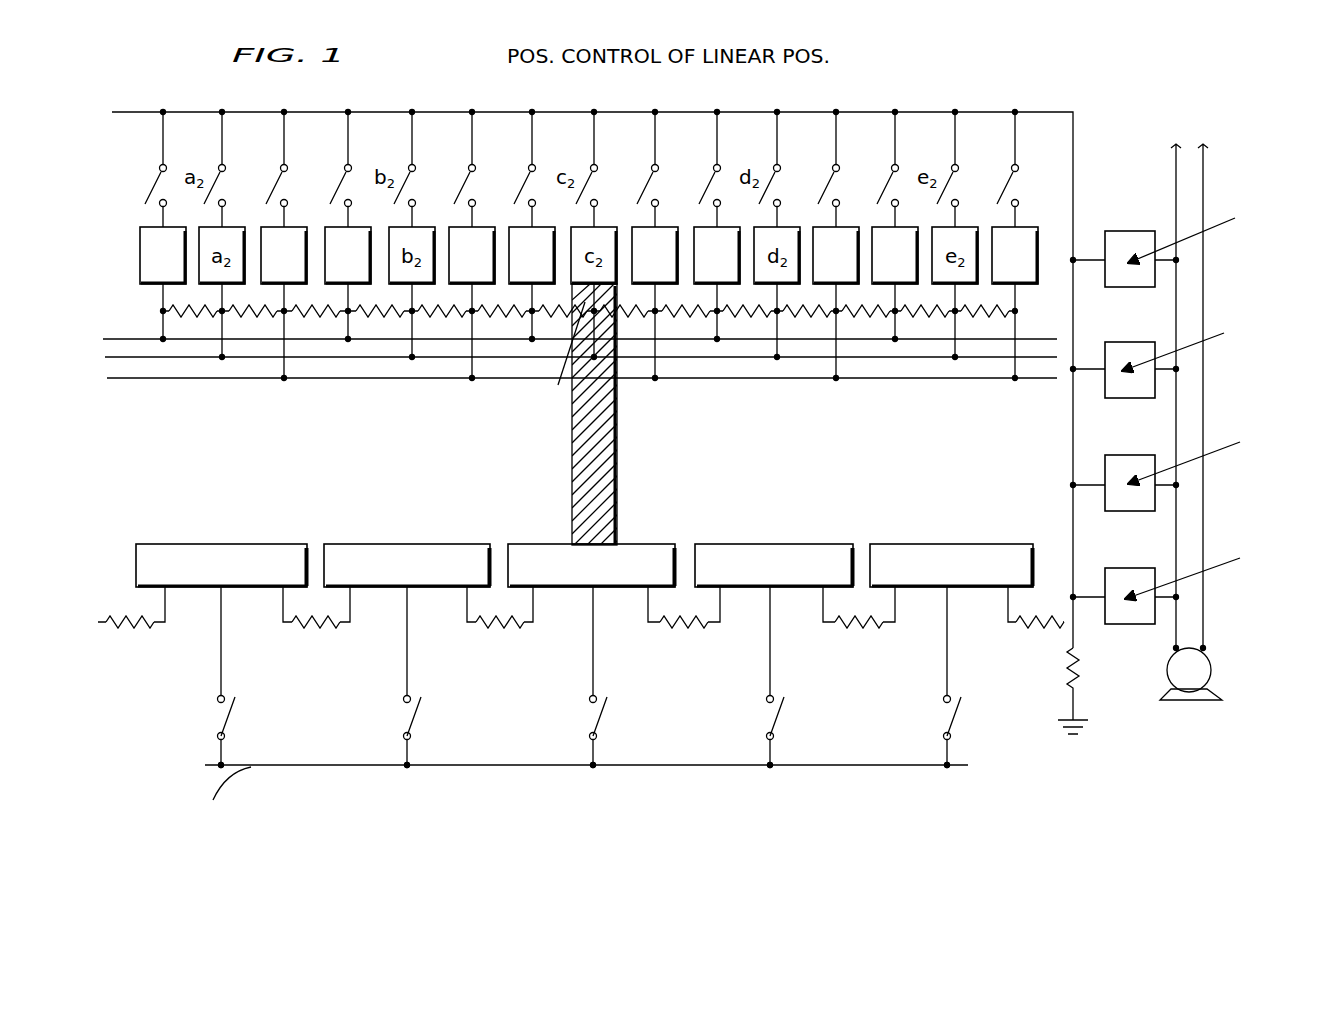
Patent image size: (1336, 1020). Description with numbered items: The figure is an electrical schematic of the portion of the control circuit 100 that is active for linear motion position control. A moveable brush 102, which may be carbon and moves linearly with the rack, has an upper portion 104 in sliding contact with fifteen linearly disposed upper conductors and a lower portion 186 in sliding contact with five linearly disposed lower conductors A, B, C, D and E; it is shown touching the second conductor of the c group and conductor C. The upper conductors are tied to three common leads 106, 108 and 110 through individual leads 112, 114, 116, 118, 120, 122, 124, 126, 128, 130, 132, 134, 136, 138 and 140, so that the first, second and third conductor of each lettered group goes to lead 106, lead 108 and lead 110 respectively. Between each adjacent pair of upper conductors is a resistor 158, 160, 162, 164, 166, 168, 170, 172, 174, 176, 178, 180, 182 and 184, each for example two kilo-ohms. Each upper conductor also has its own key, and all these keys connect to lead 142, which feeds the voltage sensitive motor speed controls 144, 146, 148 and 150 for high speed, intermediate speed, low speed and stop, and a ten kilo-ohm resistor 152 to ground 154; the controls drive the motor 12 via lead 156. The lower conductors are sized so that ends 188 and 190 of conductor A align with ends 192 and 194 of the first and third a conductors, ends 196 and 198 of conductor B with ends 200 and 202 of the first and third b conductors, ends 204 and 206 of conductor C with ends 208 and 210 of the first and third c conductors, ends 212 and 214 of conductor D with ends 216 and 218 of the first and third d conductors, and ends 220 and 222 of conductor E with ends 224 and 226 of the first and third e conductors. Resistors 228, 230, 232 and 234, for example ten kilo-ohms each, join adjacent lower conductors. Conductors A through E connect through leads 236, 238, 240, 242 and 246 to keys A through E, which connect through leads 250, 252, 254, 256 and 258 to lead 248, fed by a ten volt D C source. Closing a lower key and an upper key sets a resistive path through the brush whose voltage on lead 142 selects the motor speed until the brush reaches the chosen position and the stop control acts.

The motor 12 is at (1211, 670).
The control circuit 100 is at (1008, 755).
The moveable brush 102 is at (617, 437).
The upper portion of the brush 104 is at (552, 356).
The lead 106 is at (105, 338).
The lead 108 is at (103, 357).
The lead 110 is at (107, 378).
The lead 112 is at (159, 303).
The lead 114 is at (218, 303).
The lead 116 is at (280, 303).
The lead 118 is at (344, 303).
The lead 120 is at (408, 303).
The lead 122 is at (468, 303).
The lead 124 is at (528, 303).
The lead 126 is at (588, 303).
The lead 128 is at (656, 303).
The lead 130 is at (718, 303).
The lead 132 is at (778, 303).
The lead 134 is at (837, 303).
The lead 136 is at (896, 303).
The lead 138 is at (956, 303).
The lead 140 is at (1016, 303).
The lead 142 is at (860, 112).
The voltage sensitive motor speed control 144 is at (1147, 224).
The voltage sensitive motor speed control 146 is at (1147, 336).
The voltage sensitive motor speed control 148 is at (1147, 449).
The voltage sensitive motor speed control 150 is at (1147, 561).
The resistor 152 is at (1080, 668).
The ground 154 is at (1085, 716).
The lead 156 is at (1176, 192).
The resistor 158 is at (177, 316).
The resistor 160 is at (236, 316).
The resistor 162 is at (298, 316).
The resistor 164 is at (362, 316).
The resistor 166 is at (426, 316).
The resistor 168 is at (486, 316).
The resistor 170 is at (546, 316).
The resistor 172 is at (627, 316).
The resistor 174 is at (668, 316).
The resistor 176 is at (729, 316).
The resistor 178 is at (790, 316).
The resistor 180 is at (849, 316).
The resistor 182 is at (908, 316).
The resistor 184 is at (970, 316).
The lower portion of the brush 186 is at (615, 536).
The end of conductor A 188 is at (136, 560).
The end of conductor A 190 is at (308, 544).
The end of conductor a1 192 is at (137, 258).
The end of conductor a3 194 is at (314, 224).
The end of conductor B 196 is at (325, 544).
The end of conductor B 198 is at (489, 544).
The end of conductor b1 200 is at (327, 238).
The end of conductor b3 202 is at (500, 224).
The end of conductor C 204 is at (508, 544).
The end of conductor C 206 is at (675, 544).
The end of conductor c1 208 is at (512, 240).
The end of conductor c3 210 is at (682, 224).
The end of conductor D 212 is at (705, 544).
The end of conductor D 214 is at (850, 546).
The end of conductor d1 216 is at (697, 238).
The end of conductor d3 218 is at (862, 224).
The end of conductor E 220 is at (872, 546).
The end of conductor E 222 is at (1034, 546).
The end of conductor e1 224 is at (874, 238).
The end of conductor e3 226 is at (1045, 226).
The resistor 228 is at (303, 635).
The resistor 230 is at (488, 635).
The resistor 232 is at (668, 635).
The resistor 234 is at (843, 635).
The lead 236 is at (219, 674).
The lead 238 is at (405, 682).
The lead 240 is at (591, 683).
The lead 242 is at (768, 682).
The lead 246 is at (945, 682).
The lead 248 is at (538, 768).
The lead 250 is at (219, 750).
The lead 252 is at (405, 752).
The lead 254 is at (591, 752).
The lead 256 is at (768, 752).
The lead 258 is at (945, 752).